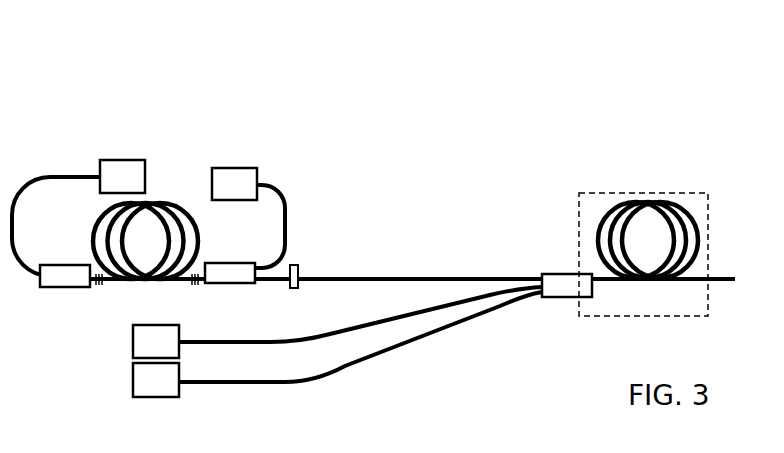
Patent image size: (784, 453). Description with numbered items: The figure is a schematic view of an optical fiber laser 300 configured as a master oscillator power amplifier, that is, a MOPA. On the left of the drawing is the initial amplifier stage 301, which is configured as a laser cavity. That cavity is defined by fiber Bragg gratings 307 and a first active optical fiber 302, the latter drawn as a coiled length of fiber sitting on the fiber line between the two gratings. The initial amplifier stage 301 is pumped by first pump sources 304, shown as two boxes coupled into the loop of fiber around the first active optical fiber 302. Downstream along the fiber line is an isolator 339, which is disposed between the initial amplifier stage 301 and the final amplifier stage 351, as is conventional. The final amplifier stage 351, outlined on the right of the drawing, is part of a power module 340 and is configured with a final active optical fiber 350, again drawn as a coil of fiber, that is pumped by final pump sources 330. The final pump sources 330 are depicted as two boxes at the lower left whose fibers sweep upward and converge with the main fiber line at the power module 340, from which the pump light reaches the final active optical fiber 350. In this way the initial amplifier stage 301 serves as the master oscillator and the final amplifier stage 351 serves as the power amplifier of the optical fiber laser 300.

The optical fiber laser 300 is at (580, 83).
The initial amplifier stage 301 is at (92, 130).
The first active optical fiber 302 is at (157, 200).
The first pump sources 304 is at (233, 182).
The fiber Bragg gratings 307 is at (190, 287).
The final pump sources 330 is at (147, 385).
The isolator 339 is at (293, 263).
The power module 340 is at (604, 317).
The final active optical fiber 350 is at (693, 217).
The final amplifier stage 351 is at (653, 170).